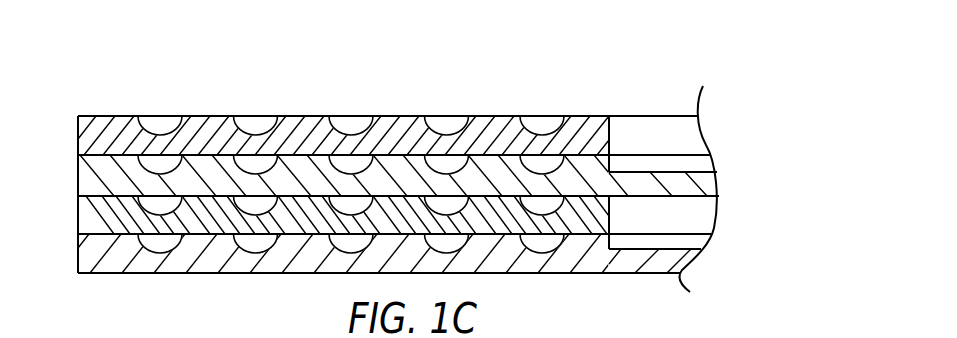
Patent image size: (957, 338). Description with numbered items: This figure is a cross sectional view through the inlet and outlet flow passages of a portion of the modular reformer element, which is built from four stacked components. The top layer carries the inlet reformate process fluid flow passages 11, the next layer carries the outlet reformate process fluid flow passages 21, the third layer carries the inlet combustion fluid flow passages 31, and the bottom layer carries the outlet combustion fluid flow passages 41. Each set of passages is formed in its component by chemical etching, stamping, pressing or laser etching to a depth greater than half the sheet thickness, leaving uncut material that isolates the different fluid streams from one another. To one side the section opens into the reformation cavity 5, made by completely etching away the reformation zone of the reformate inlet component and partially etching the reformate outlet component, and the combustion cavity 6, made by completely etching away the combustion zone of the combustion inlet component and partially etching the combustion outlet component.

The inlet reformate process fluid flow passages 11 is at (549, 125).
The outlet reformate process fluid flow passages 21 is at (447, 162).
The inlet combustion fluid flow passages 31 is at (265, 205).
The outlet combustion fluid flow passages 41 is at (158, 247).
The reformation cavity 5 is at (685, 138).
The combustion cavity 6 is at (698, 216).